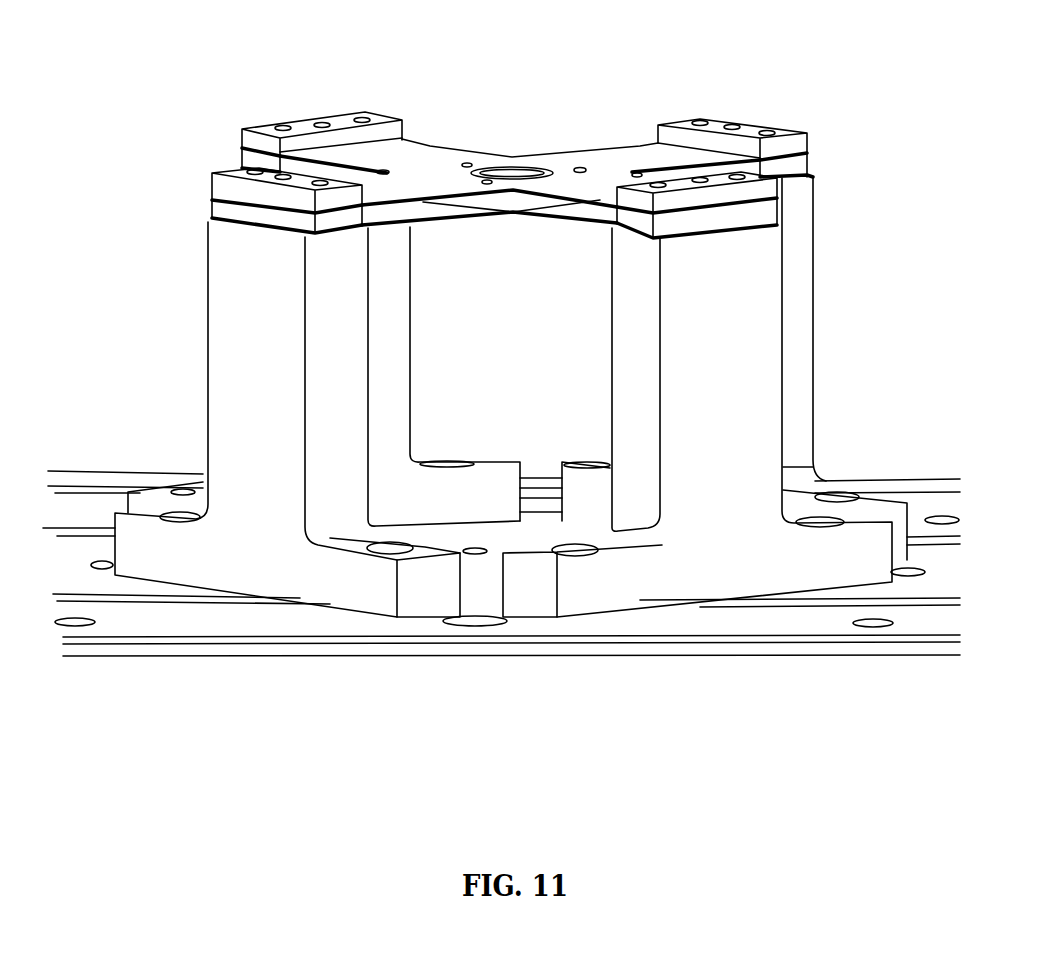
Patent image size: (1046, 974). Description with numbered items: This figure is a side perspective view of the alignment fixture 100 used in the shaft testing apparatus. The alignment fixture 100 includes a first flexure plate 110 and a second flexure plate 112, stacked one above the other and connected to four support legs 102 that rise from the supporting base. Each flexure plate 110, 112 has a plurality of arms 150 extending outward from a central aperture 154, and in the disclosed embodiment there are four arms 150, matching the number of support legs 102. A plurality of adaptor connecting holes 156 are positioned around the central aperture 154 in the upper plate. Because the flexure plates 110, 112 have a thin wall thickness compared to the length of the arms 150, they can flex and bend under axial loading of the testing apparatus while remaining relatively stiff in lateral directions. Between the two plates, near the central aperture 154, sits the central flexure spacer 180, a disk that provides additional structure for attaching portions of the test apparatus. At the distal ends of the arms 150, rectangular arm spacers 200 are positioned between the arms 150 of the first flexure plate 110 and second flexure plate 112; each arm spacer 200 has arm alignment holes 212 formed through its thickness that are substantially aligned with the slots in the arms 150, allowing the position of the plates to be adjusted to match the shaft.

The alignment fixture 100 is at (853, 180).
The support legs 102 is at (274, 368).
The first flexure plate 110 is at (422, 173).
The second flexure plate 112 is at (588, 229).
The arms 150 is at (653, 157).
The central aperture 154 is at (513, 167).
The adaptor connecting holes 156 is at (580, 167).
The central flexure spacer 180 is at (510, 225).
The arm spacer 200 is at (223, 208).
The arm alignment holes 212 is at (770, 126).